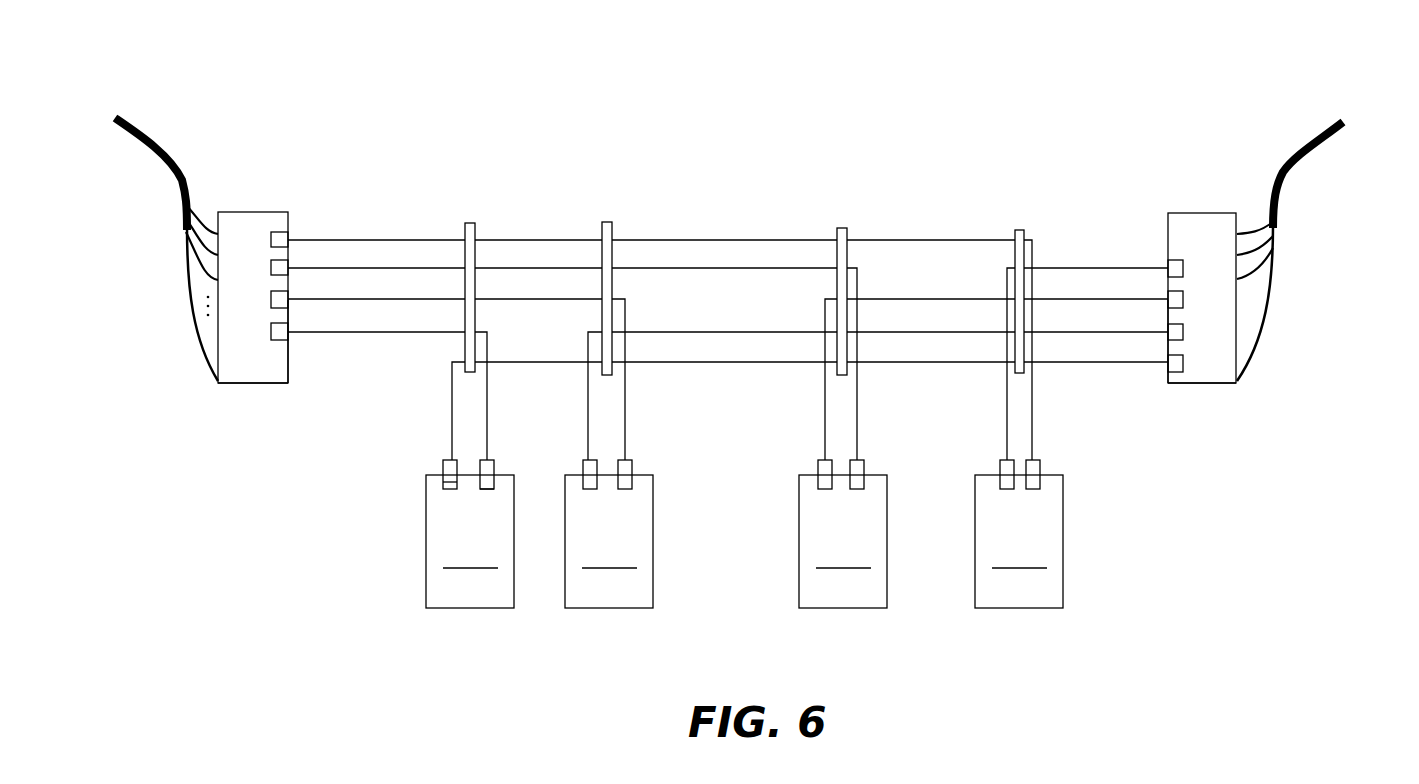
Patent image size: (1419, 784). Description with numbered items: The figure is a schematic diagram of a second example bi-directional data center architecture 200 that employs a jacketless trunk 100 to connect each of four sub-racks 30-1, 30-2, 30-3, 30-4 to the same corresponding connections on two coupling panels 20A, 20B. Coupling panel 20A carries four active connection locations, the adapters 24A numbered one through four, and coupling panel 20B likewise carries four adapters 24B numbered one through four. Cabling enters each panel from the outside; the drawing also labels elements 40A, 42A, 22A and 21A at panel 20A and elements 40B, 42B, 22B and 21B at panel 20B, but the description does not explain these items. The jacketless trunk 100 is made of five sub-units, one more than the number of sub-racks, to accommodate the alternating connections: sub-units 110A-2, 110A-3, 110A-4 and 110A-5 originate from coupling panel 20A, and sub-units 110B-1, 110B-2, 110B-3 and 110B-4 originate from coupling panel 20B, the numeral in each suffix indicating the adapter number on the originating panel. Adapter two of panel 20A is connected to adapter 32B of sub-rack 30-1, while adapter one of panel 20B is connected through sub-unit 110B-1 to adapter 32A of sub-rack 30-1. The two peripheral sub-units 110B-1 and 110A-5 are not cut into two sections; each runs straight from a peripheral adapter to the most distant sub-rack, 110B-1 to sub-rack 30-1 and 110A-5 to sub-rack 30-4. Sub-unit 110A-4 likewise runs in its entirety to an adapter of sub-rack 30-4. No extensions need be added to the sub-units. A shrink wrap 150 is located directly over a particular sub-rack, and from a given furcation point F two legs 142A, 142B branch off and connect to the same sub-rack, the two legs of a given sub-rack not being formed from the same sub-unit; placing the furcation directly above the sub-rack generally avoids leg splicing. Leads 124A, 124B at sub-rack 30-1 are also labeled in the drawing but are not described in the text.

The architecture 200 is at (413, 55).
The jacketless trunk 100 is at (738, 214).
The first trunk cable 40A is at (150, 137).
The second trunk cable 40B is at (1318, 140).
The first trunk cable conductors 42A is at (168, 268).
The second trunk cable conductors 42B is at (1307, 261).
The coupling panel 20A is at (226, 308).
The coupling panel 20B is at (1221, 307).
The adapters 24A is at (278, 212).
The adapters 24B is at (1169, 213).
The first connector rear face 22A is at (218, 383).
The second connector rear face 22B is at (1237, 380).
The first connector mating face 21A is at (288, 383).
The second connector mating face 21B is at (1168, 383).
The peripheral sub-unit 110A-5 is at (333, 240).
The sub-unit 110A-4 is at (335, 268).
The sub-unit 110A-3 is at (340, 300).
The sub-unit 110A-2 is at (318, 334).
The sub-unit 110B-4 is at (1048, 270).
The sub-unit 110B-3 is at (1048, 300).
The sub-unit 110B-2 is at (1048, 333).
The peripheral sub-unit 110B-1 is at (1056, 363).
The shrink wrap 150 is at (606, 222).
The furcation point F is at (452, 208).
The lead wire 124A is at (493, 462).
The lead wire 124B is at (443, 466).
The adapter 32A is at (443, 482).
The adapter 32B is at (482, 490).
The leg 142A is at (825, 417).
The leg 142B is at (857, 422).
The sub-rack 30-1 is at (456, 507).
The sub-rack 30-2 is at (609, 534).
The sub-rack 30-3 is at (842, 497).
The sub-rack 30-4 is at (1019, 534).